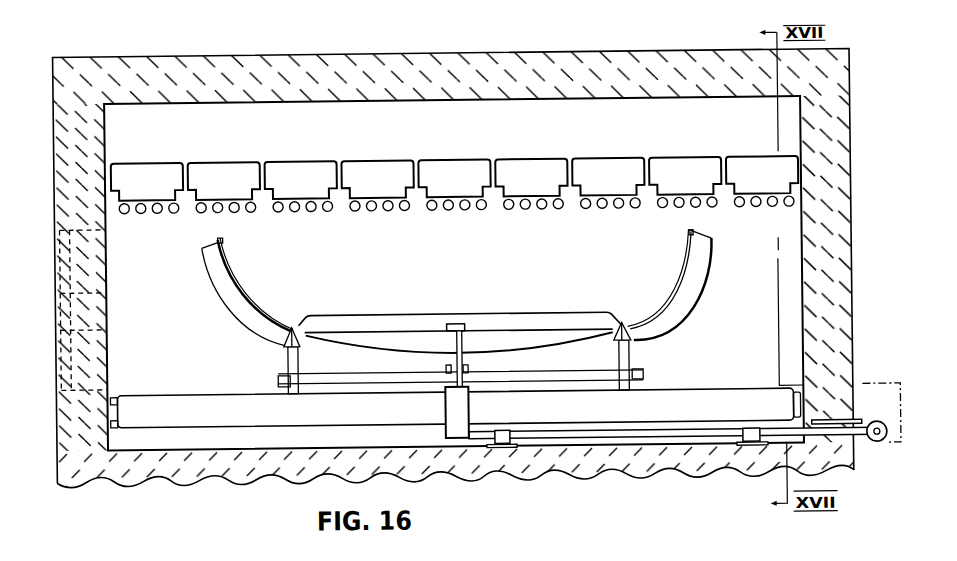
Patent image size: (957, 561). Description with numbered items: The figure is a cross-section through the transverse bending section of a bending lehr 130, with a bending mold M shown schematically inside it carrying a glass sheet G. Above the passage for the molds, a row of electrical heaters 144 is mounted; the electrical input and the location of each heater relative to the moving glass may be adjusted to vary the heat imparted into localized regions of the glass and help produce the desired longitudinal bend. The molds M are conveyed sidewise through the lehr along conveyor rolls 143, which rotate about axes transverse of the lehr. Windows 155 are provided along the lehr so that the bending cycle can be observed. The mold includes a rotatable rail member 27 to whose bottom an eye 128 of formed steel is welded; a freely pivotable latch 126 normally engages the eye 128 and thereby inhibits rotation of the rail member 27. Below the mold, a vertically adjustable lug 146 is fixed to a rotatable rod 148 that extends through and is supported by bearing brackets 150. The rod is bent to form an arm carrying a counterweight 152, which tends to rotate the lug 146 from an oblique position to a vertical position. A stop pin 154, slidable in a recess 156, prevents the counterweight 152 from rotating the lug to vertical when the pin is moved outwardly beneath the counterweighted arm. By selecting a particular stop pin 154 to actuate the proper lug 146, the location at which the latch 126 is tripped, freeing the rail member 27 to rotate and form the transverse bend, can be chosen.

The rotatable rail member 27 is at (407, 321).
The latch 126 is at (461, 357).
The eye 128 is at (460, 322).
The bending lehr 130 is at (852, 266).
The conveyor rolls 143 is at (172, 394).
The electrical heaters 144 is at (754, 203).
The vertically adjustable lug 146 is at (455, 427).
The rotatable rod 148 is at (606, 437).
The bearing brackets 150 is at (746, 493).
The counterweight 152 is at (886, 447).
The stop pin 154 is at (857, 426).
The windows 155 is at (106, 329).
The recess 156 is at (831, 420).
The glass sheet G is at (237, 276).
The mold M is at (220, 299).